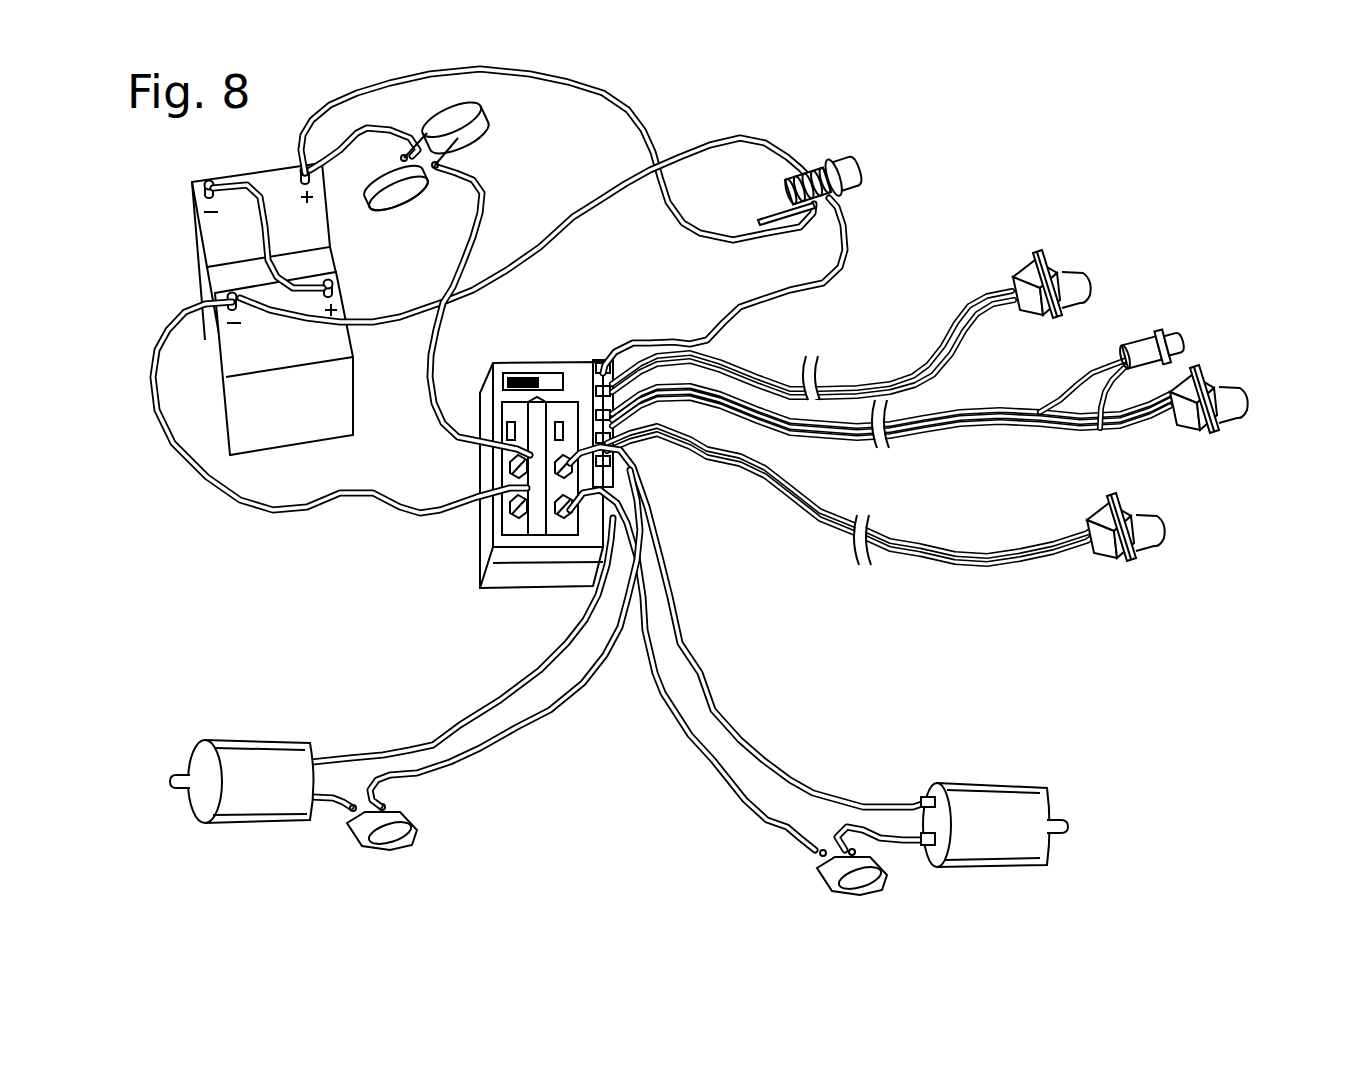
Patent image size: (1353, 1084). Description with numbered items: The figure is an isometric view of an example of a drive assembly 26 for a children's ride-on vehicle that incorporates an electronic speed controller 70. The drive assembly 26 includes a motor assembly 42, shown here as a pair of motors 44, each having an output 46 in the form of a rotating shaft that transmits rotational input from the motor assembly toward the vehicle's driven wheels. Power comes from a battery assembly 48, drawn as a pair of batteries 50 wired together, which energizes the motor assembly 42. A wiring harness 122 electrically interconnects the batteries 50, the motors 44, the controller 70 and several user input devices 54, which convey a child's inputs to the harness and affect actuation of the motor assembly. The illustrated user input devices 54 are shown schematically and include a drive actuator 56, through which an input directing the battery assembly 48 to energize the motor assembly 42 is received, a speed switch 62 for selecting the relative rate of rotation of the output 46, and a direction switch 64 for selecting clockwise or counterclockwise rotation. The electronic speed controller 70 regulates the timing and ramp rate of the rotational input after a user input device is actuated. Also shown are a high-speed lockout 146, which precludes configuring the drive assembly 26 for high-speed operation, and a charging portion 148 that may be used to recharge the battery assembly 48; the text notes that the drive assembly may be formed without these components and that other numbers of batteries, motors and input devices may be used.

The drive assembly 26 is at (266, 633).
The motor assembly 42 is at (231, 840).
The motor 44 is at (270, 827).
The output 46 is at (180, 770).
The battery assembly 48 is at (180, 203).
The battery 50 is at (252, 175).
The user input device 54 is at (1062, 262).
The drive actuator 56 is at (1237, 393).
The speed switch 62 is at (1077, 280).
The direction switch 64 is at (1157, 520).
The electronic speed controller 70 is at (522, 605).
The wiring harness 122 is at (550, 710).
The high-speed lockout 146 is at (522, 372).
The charging portion 148 is at (863, 173).